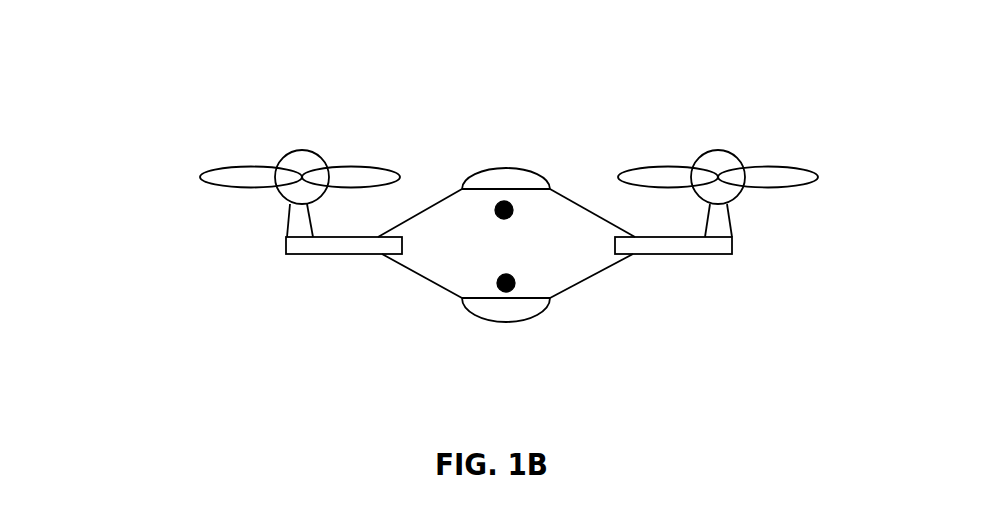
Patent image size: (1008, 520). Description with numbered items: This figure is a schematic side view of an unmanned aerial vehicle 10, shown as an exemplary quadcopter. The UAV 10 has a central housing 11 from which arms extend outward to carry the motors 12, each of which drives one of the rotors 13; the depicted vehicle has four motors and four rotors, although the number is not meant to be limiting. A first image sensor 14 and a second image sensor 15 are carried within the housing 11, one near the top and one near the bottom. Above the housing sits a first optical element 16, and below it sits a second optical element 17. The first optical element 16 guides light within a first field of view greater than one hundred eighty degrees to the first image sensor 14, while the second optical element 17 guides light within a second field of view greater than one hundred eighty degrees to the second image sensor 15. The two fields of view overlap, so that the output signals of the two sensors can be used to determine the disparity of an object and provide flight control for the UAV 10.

The unmanned aerial vehicle 10 is at (660, 99).
The housing 11 is at (445, 275).
The motors 12 is at (717, 220).
The rotors 13 is at (775, 178).
The first image sensor 14 is at (498, 207).
The second image sensor 15 is at (499, 286).
The first optical element 16 is at (525, 147).
The second optical element 17 is at (515, 312).